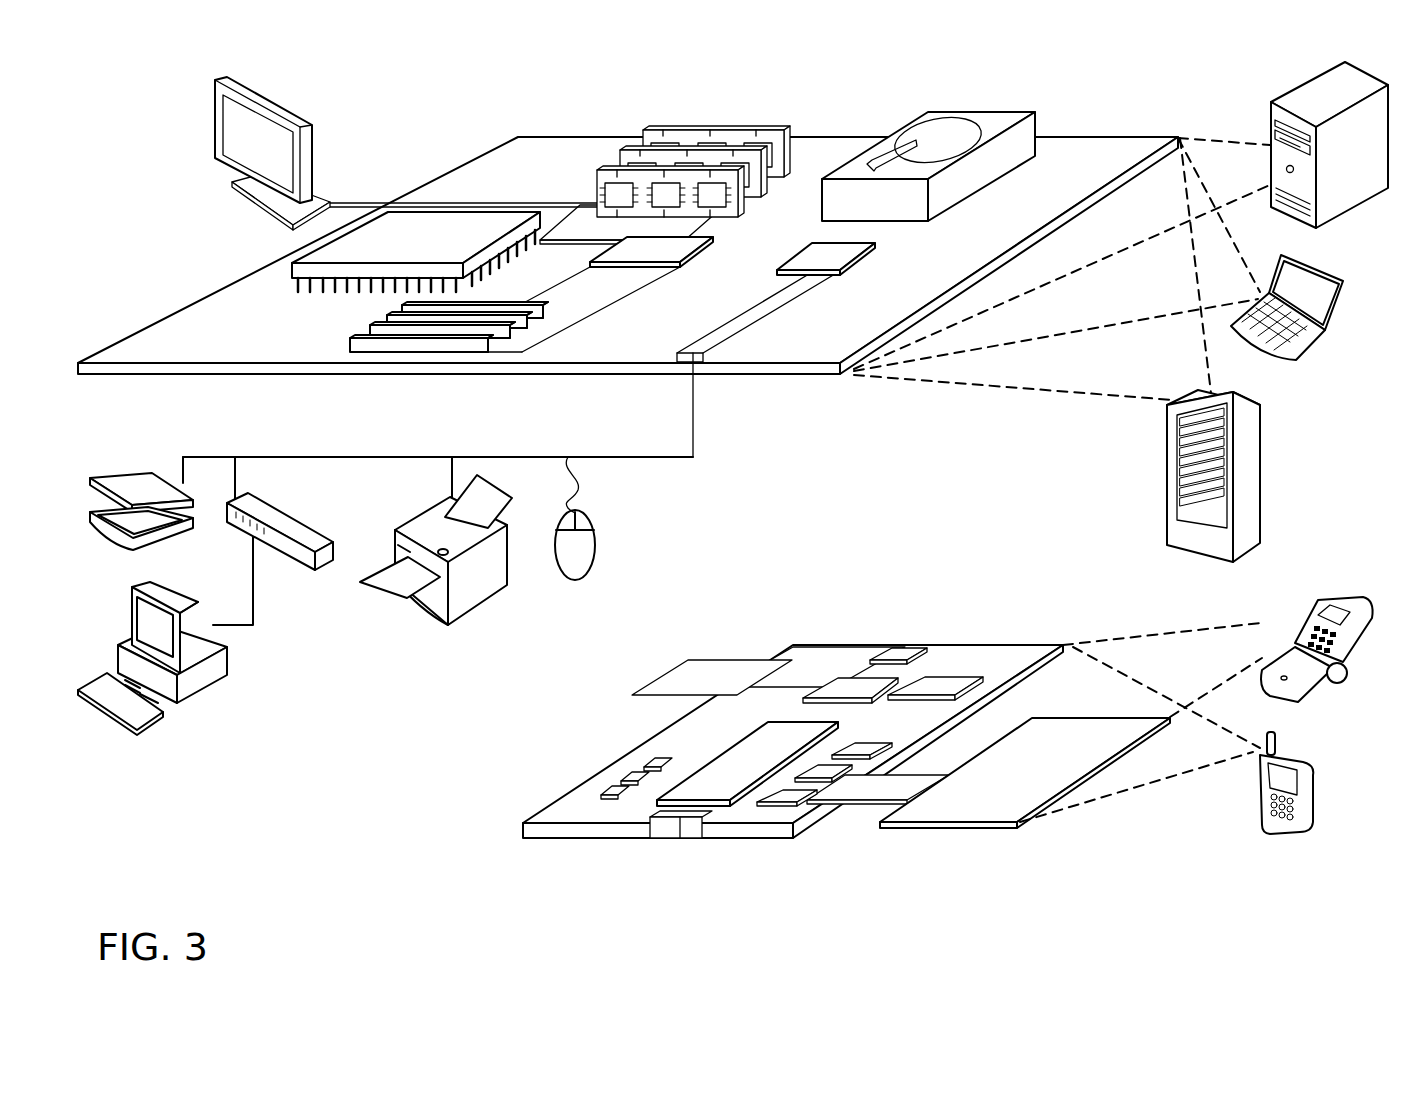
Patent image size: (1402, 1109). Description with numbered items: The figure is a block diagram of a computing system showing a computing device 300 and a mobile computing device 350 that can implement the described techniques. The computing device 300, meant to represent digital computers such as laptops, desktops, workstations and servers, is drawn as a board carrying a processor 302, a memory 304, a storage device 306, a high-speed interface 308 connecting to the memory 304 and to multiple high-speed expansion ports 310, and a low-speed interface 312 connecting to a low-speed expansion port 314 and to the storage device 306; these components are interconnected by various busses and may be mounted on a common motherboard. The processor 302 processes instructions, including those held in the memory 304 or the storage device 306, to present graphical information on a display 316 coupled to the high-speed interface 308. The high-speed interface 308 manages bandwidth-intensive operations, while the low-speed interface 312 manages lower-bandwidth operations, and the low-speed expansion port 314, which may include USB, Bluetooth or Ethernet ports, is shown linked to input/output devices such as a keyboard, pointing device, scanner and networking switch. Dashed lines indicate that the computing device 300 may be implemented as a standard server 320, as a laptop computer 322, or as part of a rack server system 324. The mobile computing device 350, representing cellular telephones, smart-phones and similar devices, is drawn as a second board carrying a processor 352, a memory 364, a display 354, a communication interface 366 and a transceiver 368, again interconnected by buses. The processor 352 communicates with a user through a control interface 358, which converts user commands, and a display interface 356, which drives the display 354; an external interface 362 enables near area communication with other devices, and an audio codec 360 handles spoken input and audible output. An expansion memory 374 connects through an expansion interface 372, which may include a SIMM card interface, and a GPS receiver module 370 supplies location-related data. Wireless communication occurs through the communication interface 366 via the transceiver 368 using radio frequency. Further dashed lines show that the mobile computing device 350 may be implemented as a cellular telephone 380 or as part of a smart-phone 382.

The computing device 300 is at (437, 104).
The processor 302 is at (290, 268).
The memory 304 is at (660, 128).
The storage device 306 is at (922, 116).
The high-speed interface 308 is at (627, 248).
The high-speed expansion ports 310 is at (377, 332).
The low-speed interface 312 is at (822, 257).
The low-speed expansion port 314 is at (703, 364).
The display 316 is at (222, 80).
The standard server 320 is at (1271, 122).
The laptop computer 322 is at (1294, 364).
The rack server system 324 is at (1168, 500).
The mobile computing device 350 is at (497, 834).
The processor 352 is at (718, 790).
The display 354 is at (980, 807).
The display interface 356 is at (795, 800).
The control interface 358 is at (835, 777).
The audio codec 360 is at (863, 747).
The external interface 362 is at (680, 838).
The memory 364 is at (622, 779).
The communication interface 366 is at (852, 684).
The transceiver 368 is at (937, 688).
The GPS receiver module 370 is at (915, 650).
The expansion interface 372 is at (773, 658).
The expansion memory 374 is at (690, 660).
The cellular telephone 380 is at (1330, 603).
The smart-phone 382 is at (1262, 755).